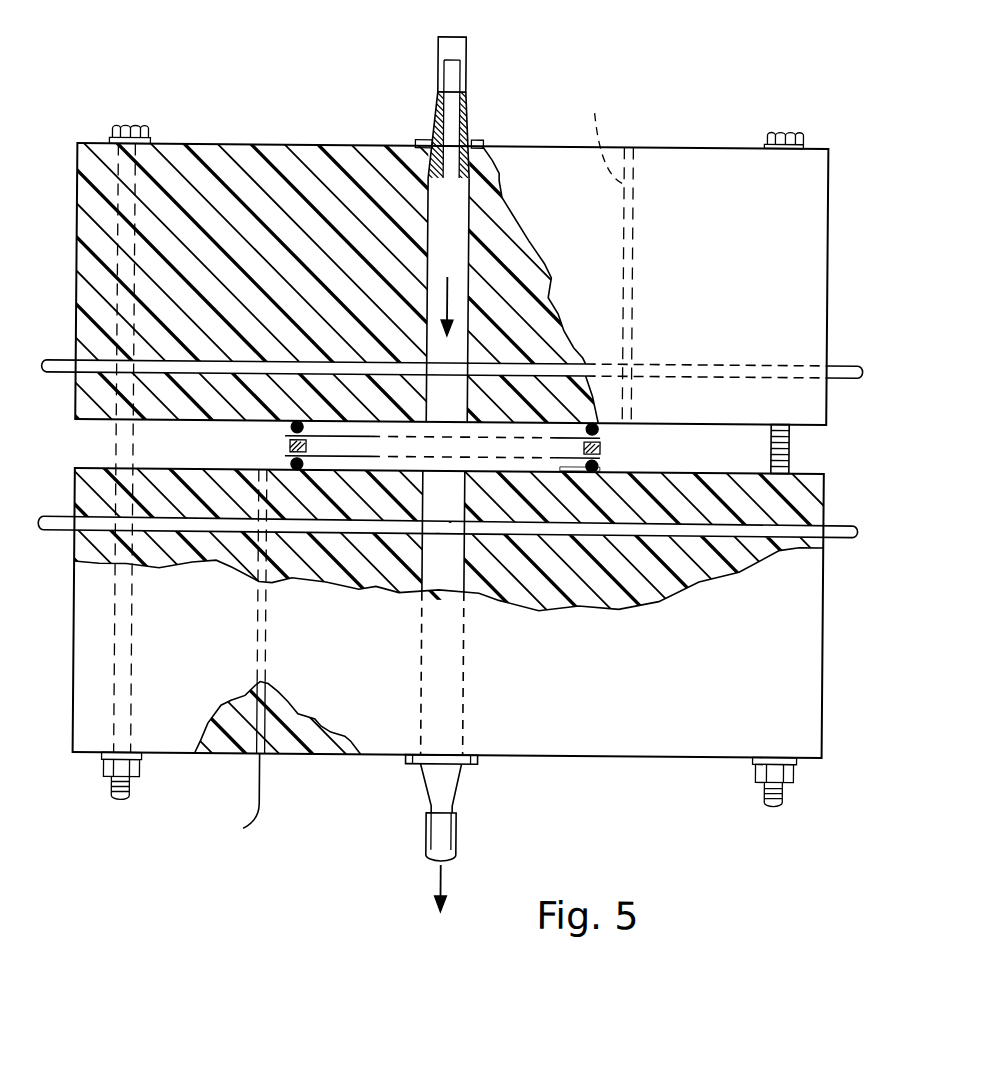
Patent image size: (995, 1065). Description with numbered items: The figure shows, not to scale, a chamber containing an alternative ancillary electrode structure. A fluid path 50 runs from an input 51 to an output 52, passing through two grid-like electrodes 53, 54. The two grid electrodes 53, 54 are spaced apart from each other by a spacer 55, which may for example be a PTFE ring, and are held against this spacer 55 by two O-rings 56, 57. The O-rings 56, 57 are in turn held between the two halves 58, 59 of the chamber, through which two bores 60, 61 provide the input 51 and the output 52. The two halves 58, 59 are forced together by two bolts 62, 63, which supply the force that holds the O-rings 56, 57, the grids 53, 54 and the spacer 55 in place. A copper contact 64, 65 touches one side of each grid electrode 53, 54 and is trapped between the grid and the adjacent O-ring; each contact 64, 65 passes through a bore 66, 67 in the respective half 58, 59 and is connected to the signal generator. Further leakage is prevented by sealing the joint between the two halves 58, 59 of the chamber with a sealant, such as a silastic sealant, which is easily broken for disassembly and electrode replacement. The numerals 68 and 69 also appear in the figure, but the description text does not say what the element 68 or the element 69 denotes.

The flow channel 50 is at (447, 298).
The inlet fitting 51 is at (432, 135).
The outlet fitting 52 is at (437, 784).
The seal 53 is at (594, 423).
The membrane 54 is at (588, 450).
The seal 55 is at (289, 447).
The O-ring 56 is at (599, 465).
The O-ring 57 is at (290, 429).
The upper block 58 is at (517, 146).
The lower block 59 is at (637, 742).
The heating tube 60 is at (494, 219).
The heating tube 61 is at (417, 572).
The bolt 62 is at (122, 128).
The bolt 63 is at (778, 130).
The electrode lead 64 is at (262, 787).
The electrode 65 is at (634, 146).
The electrode lead 66 is at (267, 728).
The electrode 67 is at (601, 134).
The threaded rod 68 is at (724, 520).
The O-ring 69 is at (554, 376).